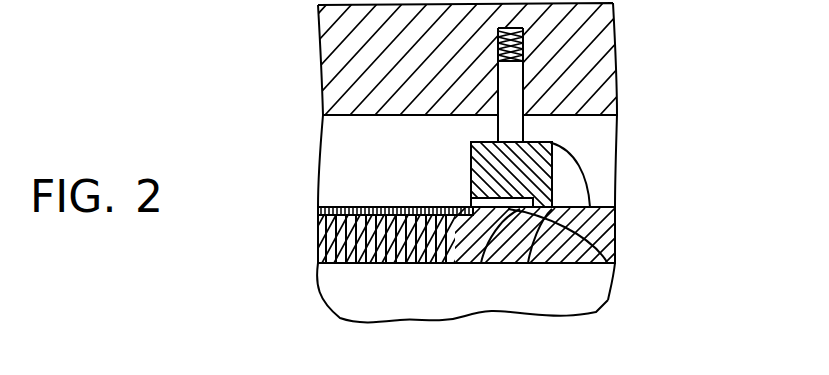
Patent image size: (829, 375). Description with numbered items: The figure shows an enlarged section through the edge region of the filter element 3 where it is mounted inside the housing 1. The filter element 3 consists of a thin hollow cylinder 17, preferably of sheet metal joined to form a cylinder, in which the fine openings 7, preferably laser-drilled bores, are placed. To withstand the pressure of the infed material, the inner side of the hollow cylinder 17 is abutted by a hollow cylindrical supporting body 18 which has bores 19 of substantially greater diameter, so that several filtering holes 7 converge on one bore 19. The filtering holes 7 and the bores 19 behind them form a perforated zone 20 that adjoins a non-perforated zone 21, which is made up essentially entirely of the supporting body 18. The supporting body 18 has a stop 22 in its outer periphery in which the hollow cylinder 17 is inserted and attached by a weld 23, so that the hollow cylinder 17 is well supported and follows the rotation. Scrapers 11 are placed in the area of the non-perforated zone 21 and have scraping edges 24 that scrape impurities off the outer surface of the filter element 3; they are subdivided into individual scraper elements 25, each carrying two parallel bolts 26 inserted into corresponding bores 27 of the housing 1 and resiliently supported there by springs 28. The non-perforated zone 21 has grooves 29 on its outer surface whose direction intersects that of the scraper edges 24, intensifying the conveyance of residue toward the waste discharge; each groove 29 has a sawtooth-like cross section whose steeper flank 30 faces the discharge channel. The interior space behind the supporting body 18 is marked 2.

The housing 1 is at (335, 42).
The cavity 2 is at (338, 131).
The filter element 3 is at (284, 230).
The fine openings 7 is at (405, 208).
The scrapers 11 is at (459, 142).
The hollow cylinder 17 is at (316, 214).
The supporting body 18 is at (318, 252).
The bores 19 is at (392, 263).
The perforated zone 20 is at (340, 316).
The non-perforated zone 21 is at (630, 297).
The stop 22 is at (463, 205).
The weld 23 is at (481, 263).
The scraping edges 24 is at (557, 196).
The scraper elements 25 is at (553, 160).
The bolts 26 is at (523, 123).
The bores of the housing 27 is at (523, 73).
The springs 28 is at (523, 31).
The grooves 29 is at (528, 263).
The steeper flank 30 is at (604, 262).